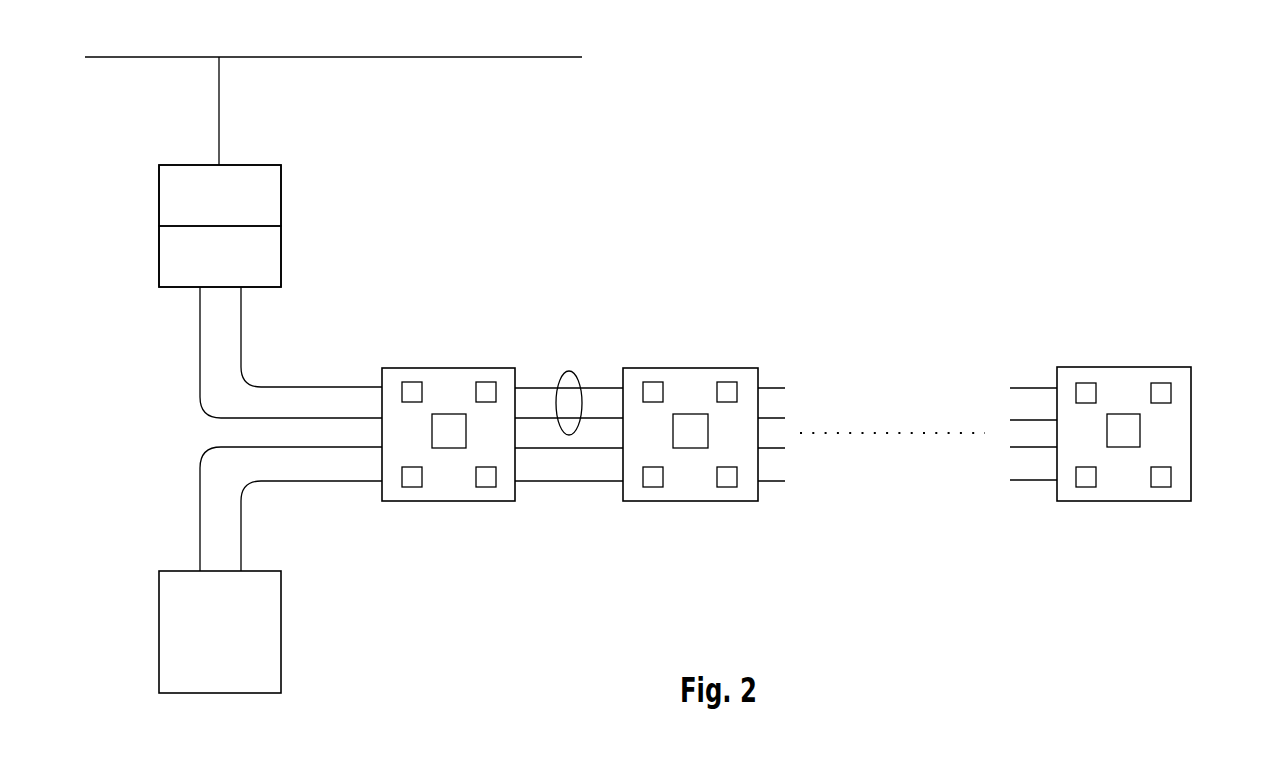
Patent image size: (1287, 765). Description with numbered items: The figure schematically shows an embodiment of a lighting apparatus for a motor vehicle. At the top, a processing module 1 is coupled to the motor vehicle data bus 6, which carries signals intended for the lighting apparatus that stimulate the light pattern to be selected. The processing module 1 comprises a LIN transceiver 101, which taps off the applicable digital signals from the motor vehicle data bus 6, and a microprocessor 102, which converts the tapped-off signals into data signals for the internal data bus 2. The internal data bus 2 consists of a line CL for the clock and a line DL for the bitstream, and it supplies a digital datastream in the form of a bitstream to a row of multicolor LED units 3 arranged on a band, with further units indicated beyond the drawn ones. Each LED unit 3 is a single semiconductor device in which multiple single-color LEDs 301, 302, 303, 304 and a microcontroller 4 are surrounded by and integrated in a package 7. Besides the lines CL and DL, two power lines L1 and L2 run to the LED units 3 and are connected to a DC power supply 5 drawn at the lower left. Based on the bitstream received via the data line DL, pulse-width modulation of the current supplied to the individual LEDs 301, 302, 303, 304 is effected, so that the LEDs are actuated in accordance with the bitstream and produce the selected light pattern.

The processing module 1 is at (264, 172).
The LIN transceiver 101 is at (220, 195).
The microprocessor 102 is at (220, 256).
The internal data bus 2 is at (172, 323).
The multicolor LED unit 3 is at (441, 373).
The single-color LED 301 is at (410, 405).
The single-color LED 302 is at (483, 378).
The single-color LED 303 is at (412, 488).
The single-color LED 304 is at (488, 488).
The microcontroller 4 is at (466, 433).
The DC power supply 5 is at (281, 628).
The motor vehicle data bus 6 is at (482, 57).
The package 7 is at (510, 510).
The clock line CL is at (304, 386).
The data line DL is at (213, 417).
The power line L1 is at (198, 528).
The power line L2 is at (241, 513).